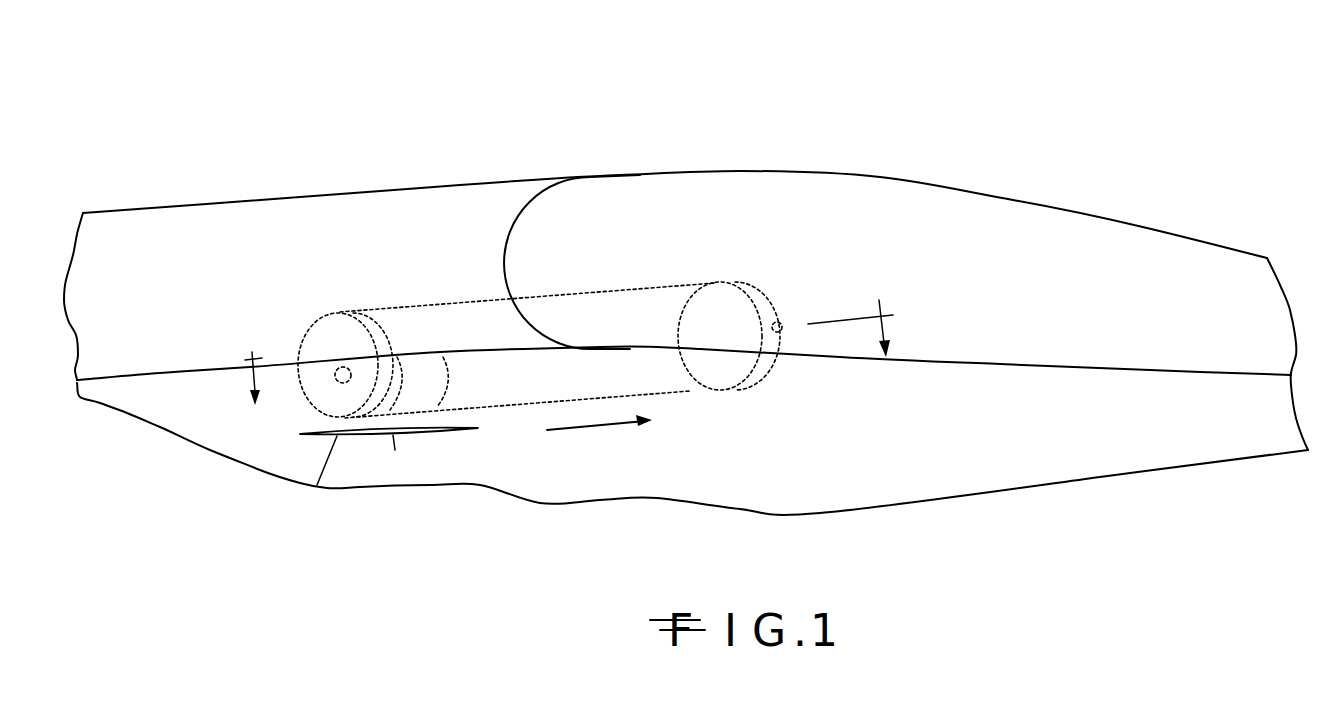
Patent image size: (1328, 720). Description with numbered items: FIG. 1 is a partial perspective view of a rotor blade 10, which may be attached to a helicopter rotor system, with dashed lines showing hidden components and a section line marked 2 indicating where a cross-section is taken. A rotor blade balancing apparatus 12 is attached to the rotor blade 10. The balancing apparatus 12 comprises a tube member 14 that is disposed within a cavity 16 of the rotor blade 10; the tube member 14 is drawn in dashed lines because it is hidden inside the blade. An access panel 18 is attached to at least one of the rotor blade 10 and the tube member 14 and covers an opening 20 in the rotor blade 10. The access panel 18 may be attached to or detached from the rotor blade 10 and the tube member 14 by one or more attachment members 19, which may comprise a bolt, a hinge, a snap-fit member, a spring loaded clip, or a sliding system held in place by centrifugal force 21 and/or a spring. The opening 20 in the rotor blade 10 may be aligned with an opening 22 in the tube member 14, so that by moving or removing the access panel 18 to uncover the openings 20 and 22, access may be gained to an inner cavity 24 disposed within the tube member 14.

The rotor blade 10 is at (700, 133).
The rotor blade balancing apparatus 12 is at (680, 393).
The tube member 14 is at (445, 300).
The cavity 16 is at (537, 297).
The access panel 18 is at (378, 437).
The attachment member 19 is at (355, 433).
The opening 20 is at (395, 450).
The centrifugal force 21 is at (594, 428).
The opening 22 is at (320, 357).
The inner cavity 24 is at (300, 365).
The section line 2 is at (567, 356).